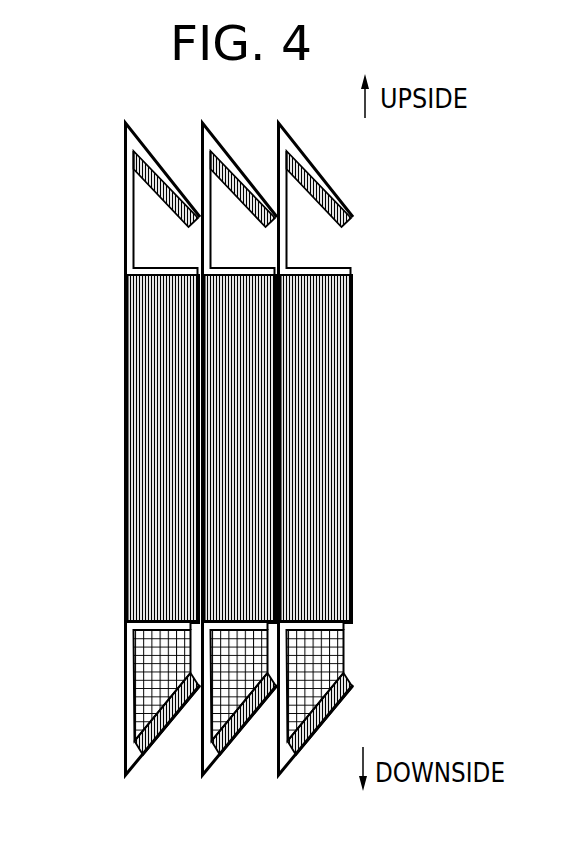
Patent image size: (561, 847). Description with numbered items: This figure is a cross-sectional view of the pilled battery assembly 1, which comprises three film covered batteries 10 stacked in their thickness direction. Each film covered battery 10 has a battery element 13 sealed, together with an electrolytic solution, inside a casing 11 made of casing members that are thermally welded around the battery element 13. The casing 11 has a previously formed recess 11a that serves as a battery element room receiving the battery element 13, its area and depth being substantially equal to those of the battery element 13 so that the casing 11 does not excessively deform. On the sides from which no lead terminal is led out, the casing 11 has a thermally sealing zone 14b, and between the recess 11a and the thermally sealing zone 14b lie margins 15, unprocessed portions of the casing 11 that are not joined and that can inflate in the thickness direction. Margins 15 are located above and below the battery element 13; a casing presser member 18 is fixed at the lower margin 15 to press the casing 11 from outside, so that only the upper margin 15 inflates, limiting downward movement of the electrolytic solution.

The pilled battery assembly 1 is at (405, 361).
The film covered battery 10 is at (364, 581).
The casing 11 is at (356, 563).
The recess 11a is at (313, 272).
The battery element 13 is at (160, 383).
The thermally sealing zone 14b is at (163, 171).
The margin 15 is at (112, 165).
The casing presser member 18 is at (172, 663).